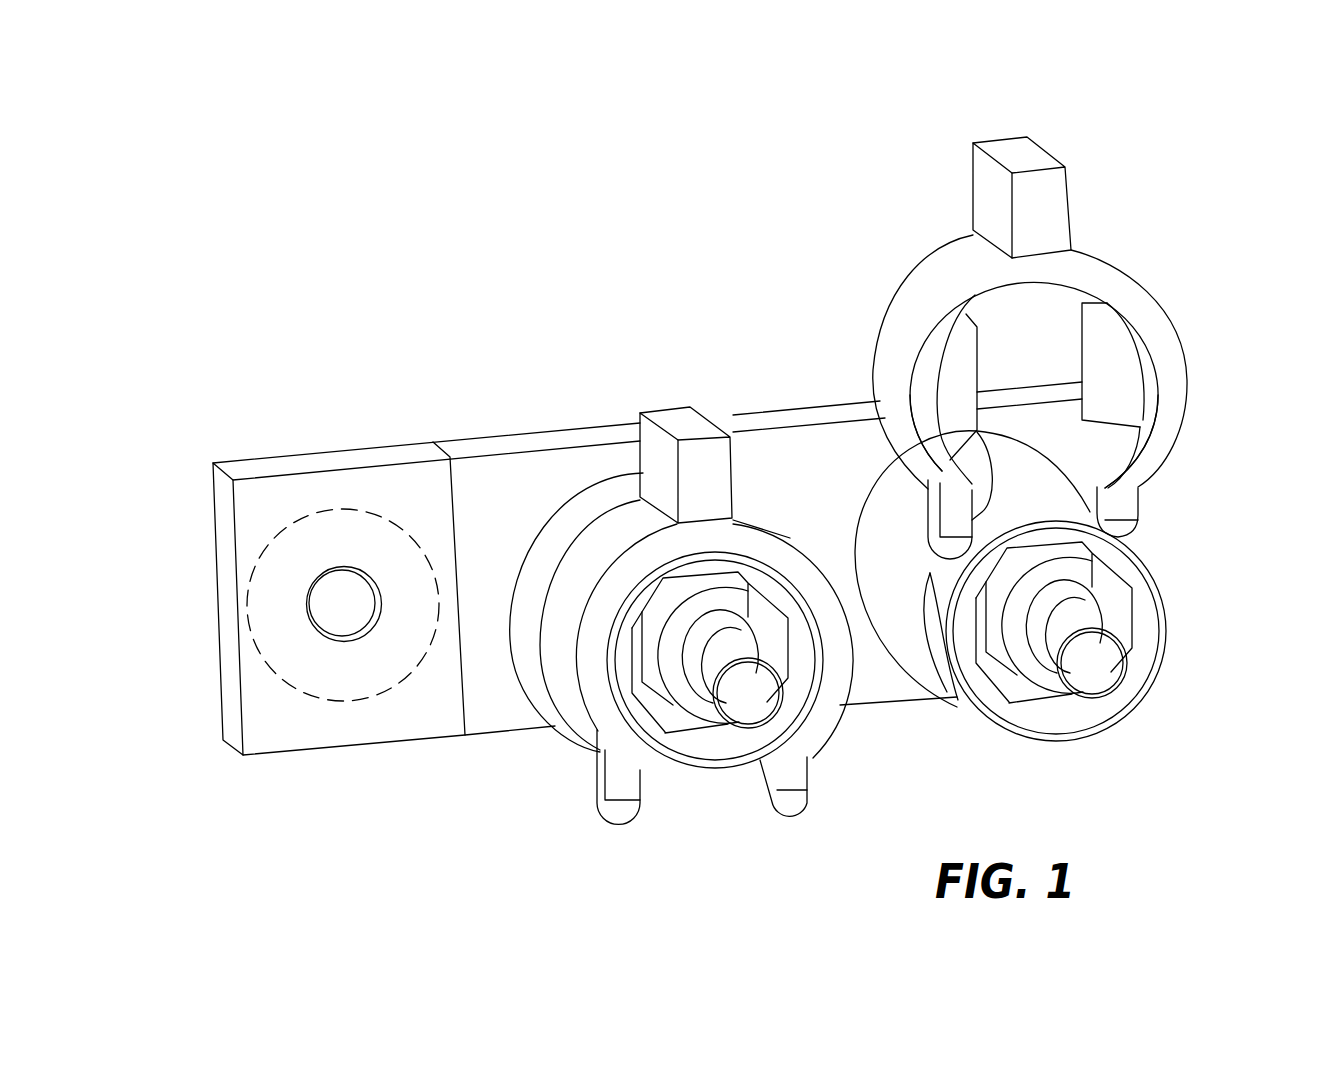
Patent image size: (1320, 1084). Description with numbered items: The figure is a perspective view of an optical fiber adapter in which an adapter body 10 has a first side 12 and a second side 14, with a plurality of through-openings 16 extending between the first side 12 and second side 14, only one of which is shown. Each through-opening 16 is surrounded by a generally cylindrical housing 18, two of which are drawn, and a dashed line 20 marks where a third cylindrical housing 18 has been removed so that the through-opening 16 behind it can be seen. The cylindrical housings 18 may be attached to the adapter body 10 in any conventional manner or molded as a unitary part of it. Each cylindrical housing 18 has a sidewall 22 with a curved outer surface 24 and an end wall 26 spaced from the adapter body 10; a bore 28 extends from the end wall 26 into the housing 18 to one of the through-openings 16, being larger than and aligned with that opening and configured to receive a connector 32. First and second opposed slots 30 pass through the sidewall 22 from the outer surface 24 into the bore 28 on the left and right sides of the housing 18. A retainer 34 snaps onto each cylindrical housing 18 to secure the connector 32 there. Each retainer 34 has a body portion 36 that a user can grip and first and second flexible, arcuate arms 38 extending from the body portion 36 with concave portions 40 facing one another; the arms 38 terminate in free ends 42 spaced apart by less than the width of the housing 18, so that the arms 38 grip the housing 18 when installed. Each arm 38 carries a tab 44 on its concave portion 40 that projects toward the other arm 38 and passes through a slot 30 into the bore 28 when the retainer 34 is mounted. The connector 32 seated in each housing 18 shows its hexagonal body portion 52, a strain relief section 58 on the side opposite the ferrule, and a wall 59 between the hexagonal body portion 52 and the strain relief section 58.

The adapter body 10 is at (197, 510).
The first side 12 is at (253, 710).
The second side 14 is at (263, 458).
The through-opening 16 is at (330, 607).
The cylindrical housing 18 is at (585, 490).
The dashed line 20 is at (272, 543).
The sidewall 22 is at (530, 550).
The curved outer surface 24 is at (557, 508).
The end wall 26 is at (713, 768).
The bore 28 is at (683, 755).
The slot 30 is at (930, 627).
The connector 32 is at (797, 715).
The retainer 34 is at (643, 453).
The body portion 36 is at (682, 427).
The arm 38 is at (807, 540).
The concave portion 40 is at (567, 677).
The free end 42 is at (617, 760).
The tab 44 is at (600, 620).
The hexagonal body portion 52 is at (605, 807).
The strain relief section 58 is at (1117, 673).
The wall 59 is at (688, 753).